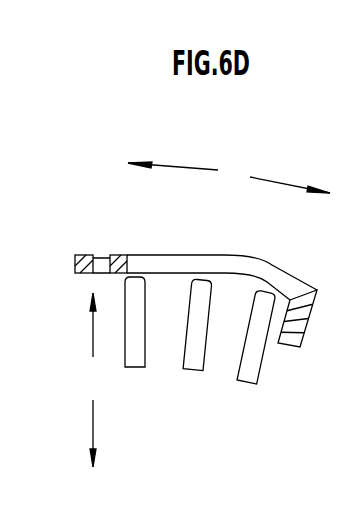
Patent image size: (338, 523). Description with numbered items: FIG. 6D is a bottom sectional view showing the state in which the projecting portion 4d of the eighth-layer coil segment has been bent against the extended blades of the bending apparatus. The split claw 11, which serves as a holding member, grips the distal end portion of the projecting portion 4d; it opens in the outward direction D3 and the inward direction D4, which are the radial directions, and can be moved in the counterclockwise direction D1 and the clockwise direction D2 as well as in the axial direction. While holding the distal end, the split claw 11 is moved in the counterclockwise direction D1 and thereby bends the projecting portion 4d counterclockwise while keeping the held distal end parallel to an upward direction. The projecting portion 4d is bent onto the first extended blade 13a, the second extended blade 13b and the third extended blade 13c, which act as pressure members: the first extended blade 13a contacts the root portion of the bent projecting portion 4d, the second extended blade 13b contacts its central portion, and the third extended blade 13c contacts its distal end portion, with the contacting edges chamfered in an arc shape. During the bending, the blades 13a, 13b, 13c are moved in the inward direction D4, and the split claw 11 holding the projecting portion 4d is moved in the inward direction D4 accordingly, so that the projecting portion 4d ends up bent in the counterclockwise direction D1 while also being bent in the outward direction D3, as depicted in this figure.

The split claw 11 is at (80, 252).
The projecting portion 4d is at (107, 253).
The first extended blade 13a is at (247, 383).
The second extended blade 13b is at (193, 371).
The third extended blade 13c is at (135, 368).
The counterclockwise direction D1 is at (198, 168).
The clockwise direction D2 is at (260, 177).
The outward direction D3 is at (92, 342).
The inward direction D4 is at (92, 421).